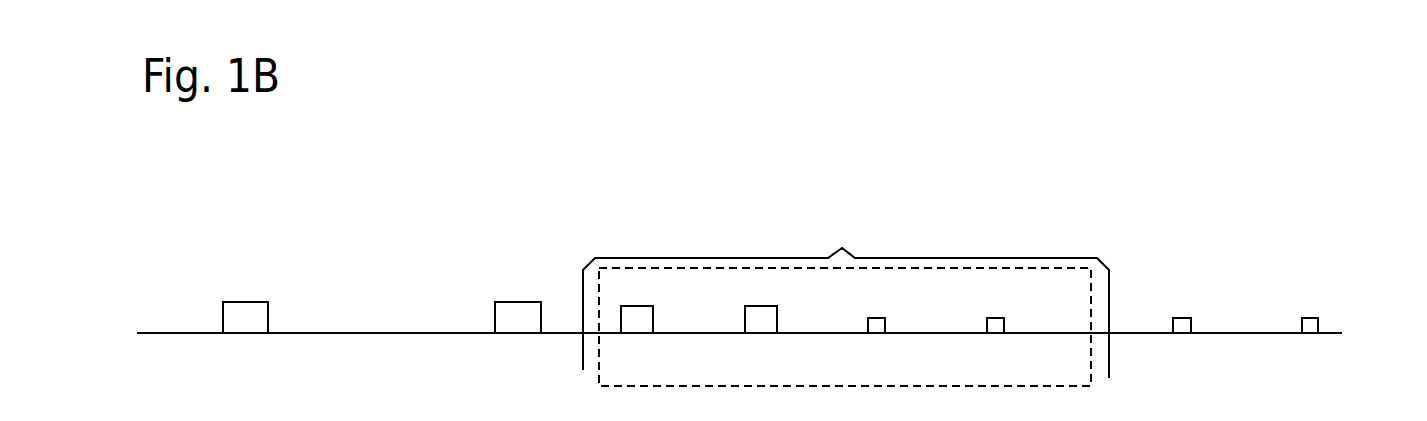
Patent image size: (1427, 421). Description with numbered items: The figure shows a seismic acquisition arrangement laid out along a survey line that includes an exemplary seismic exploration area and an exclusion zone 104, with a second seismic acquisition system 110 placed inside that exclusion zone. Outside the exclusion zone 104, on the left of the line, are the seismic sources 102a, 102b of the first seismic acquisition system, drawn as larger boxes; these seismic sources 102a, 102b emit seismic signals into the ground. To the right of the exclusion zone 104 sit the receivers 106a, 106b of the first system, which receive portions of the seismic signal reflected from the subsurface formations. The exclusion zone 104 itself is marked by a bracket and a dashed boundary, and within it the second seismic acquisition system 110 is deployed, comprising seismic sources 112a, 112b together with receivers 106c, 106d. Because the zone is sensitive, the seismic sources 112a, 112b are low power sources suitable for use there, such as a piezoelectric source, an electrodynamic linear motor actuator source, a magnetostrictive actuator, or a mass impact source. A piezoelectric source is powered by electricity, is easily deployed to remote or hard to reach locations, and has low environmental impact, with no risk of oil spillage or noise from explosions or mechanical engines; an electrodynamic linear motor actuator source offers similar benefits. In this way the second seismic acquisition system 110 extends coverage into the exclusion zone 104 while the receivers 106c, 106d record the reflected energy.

The second seismic acquisition system 110 is at (358, 192).
The seismic source 102a is at (247, 305).
The seismic source 102b is at (520, 305).
The exclusion zone 104 is at (846, 305).
The seismic source 112a is at (633, 306).
The seismic source 112b is at (760, 306).
The receiver 106a is at (1181, 318).
The receiver 106b is at (1308, 318).
The receiver 106c is at (875, 318).
The receiver 106d is at (993, 318).